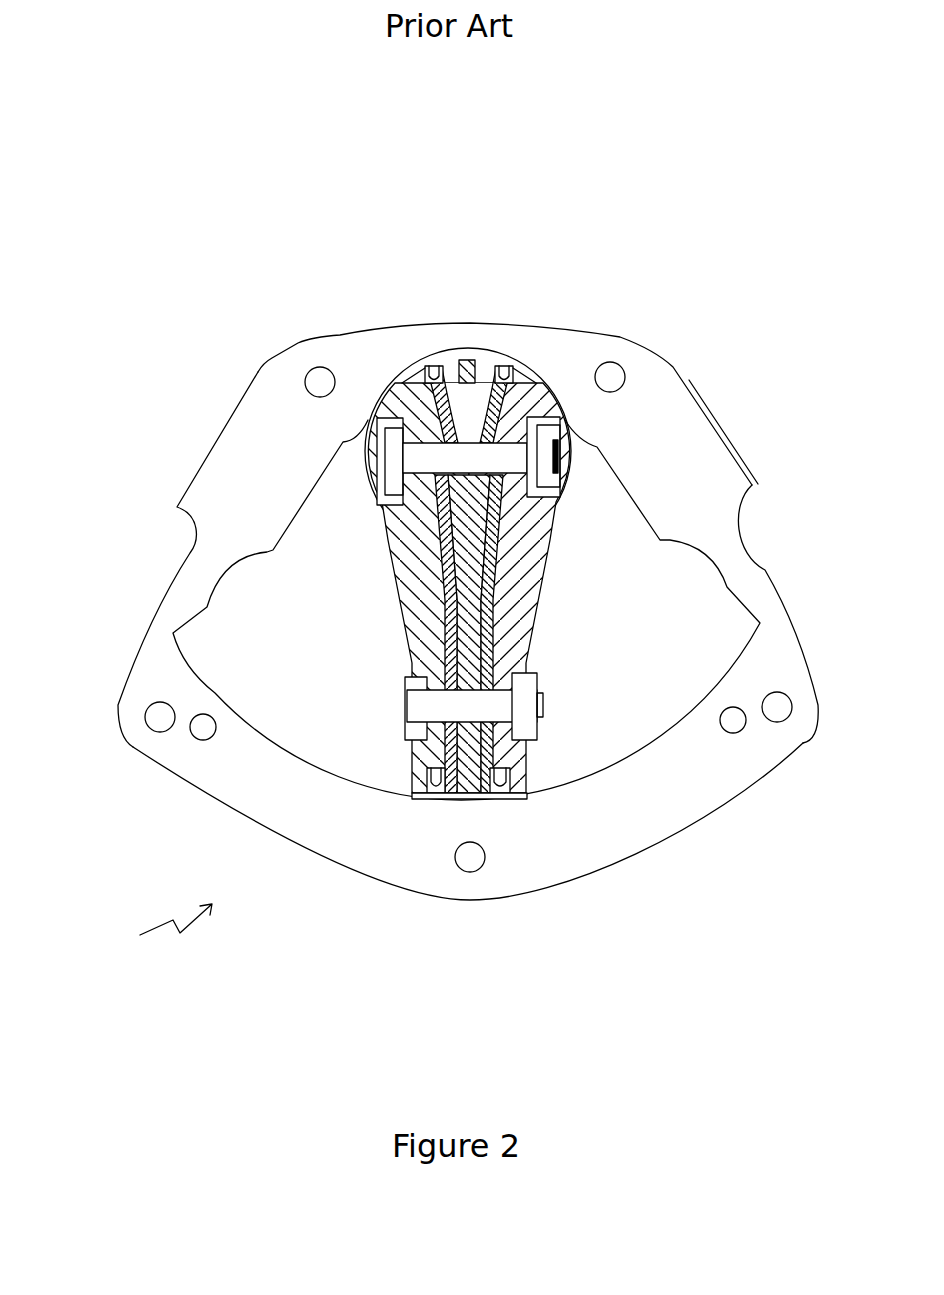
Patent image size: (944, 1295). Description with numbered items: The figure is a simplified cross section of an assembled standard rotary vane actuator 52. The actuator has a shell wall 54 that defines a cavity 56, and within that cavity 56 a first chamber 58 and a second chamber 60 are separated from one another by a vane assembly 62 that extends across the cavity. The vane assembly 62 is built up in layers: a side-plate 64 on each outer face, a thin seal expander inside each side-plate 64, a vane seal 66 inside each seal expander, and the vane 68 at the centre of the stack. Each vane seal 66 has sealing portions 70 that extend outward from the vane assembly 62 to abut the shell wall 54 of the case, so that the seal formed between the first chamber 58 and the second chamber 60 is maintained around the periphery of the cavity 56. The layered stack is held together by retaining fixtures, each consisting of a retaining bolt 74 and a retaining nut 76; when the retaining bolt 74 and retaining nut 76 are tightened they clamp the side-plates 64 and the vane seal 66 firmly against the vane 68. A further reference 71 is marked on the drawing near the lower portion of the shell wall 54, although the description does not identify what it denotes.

The standard actuator 52 is at (147, 938).
The shell wall 54 is at (600, 447).
The cavity 56 is at (603, 757).
The first chamber 58 is at (243, 633).
The second chamber 60 is at (728, 632).
The vane assembly 62 is at (410, 787).
The side-plate 64 is at (537, 563).
The vane seal 66 is at (488, 600).
The vane 68 is at (462, 642).
The sealing portions 70 is at (493, 360).
The lower plate portion 71 is at (530, 857).
The retaining bolt 74 is at (415, 463).
The retaining nut 76 is at (543, 482).